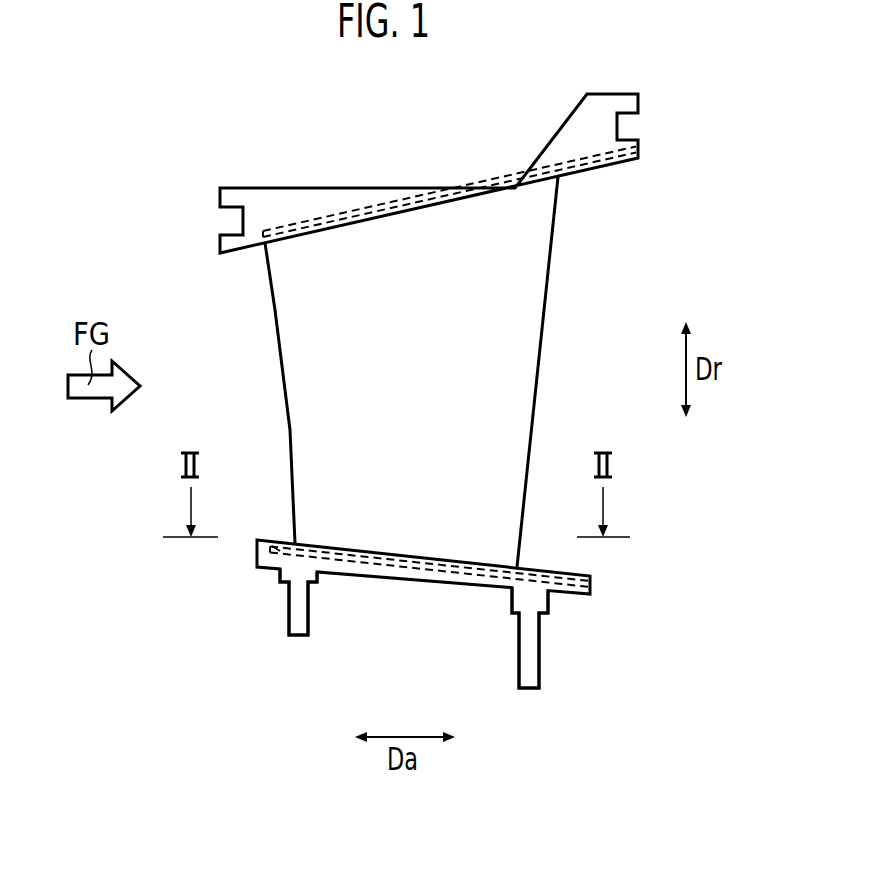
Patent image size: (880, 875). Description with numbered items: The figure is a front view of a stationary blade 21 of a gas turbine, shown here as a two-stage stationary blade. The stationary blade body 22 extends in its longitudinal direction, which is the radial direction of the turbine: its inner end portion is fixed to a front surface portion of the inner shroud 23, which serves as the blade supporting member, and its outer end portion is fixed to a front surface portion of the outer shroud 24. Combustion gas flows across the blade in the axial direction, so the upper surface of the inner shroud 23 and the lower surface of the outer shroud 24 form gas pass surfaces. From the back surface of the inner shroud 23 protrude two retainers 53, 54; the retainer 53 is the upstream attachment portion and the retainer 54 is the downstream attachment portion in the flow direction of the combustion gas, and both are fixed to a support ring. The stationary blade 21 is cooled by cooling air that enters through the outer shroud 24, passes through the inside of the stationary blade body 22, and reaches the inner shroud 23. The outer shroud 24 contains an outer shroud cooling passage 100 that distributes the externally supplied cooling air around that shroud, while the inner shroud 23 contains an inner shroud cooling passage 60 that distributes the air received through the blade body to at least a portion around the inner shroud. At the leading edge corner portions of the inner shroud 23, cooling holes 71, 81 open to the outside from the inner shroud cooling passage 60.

The stationary blade 21 is at (442, 391).
The stationary blade body 22 is at (550, 310).
The inner shroud 23 is at (376, 549).
The outer shroud 24 is at (429, 173).
The retainer 53 is at (300, 610).
The retainer 54 is at (530, 658).
The inner shroud cooling passage 60 is at (398, 538).
The cooling hole 71 is at (398, 499).
The cooling hole 81 is at (270, 540).
The outer shroud cooling passage 100 is at (368, 199).